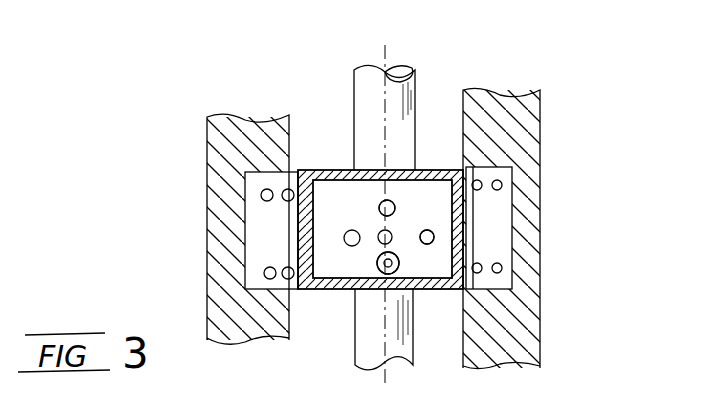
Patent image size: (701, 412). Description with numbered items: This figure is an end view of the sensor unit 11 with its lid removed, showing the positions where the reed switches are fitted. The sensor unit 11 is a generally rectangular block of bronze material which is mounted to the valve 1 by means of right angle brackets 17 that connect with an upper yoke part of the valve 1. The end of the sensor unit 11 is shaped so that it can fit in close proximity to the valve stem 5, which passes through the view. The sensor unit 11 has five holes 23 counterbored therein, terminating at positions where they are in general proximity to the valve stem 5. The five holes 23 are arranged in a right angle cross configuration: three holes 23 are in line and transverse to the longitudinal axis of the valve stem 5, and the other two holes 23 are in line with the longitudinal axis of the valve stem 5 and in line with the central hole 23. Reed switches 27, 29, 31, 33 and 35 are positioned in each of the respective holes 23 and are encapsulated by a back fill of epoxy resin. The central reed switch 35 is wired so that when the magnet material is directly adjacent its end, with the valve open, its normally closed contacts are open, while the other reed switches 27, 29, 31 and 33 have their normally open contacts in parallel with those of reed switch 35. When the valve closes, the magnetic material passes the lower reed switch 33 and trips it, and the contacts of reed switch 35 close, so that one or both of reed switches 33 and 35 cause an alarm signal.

The valve 1 is at (215, 143).
The valve stem 5 is at (405, 74).
The sensor unit 11 is at (458, 236).
The right angle brackets 17 is at (270, 215).
The holes 23 is at (350, 231).
The reed switch 27 is at (347, 246).
The reed switch 29 is at (380, 206).
The reed switch 31 is at (458, 226).
The reed switch 33 is at (383, 274).
The reed switch 35 is at (399, 258).